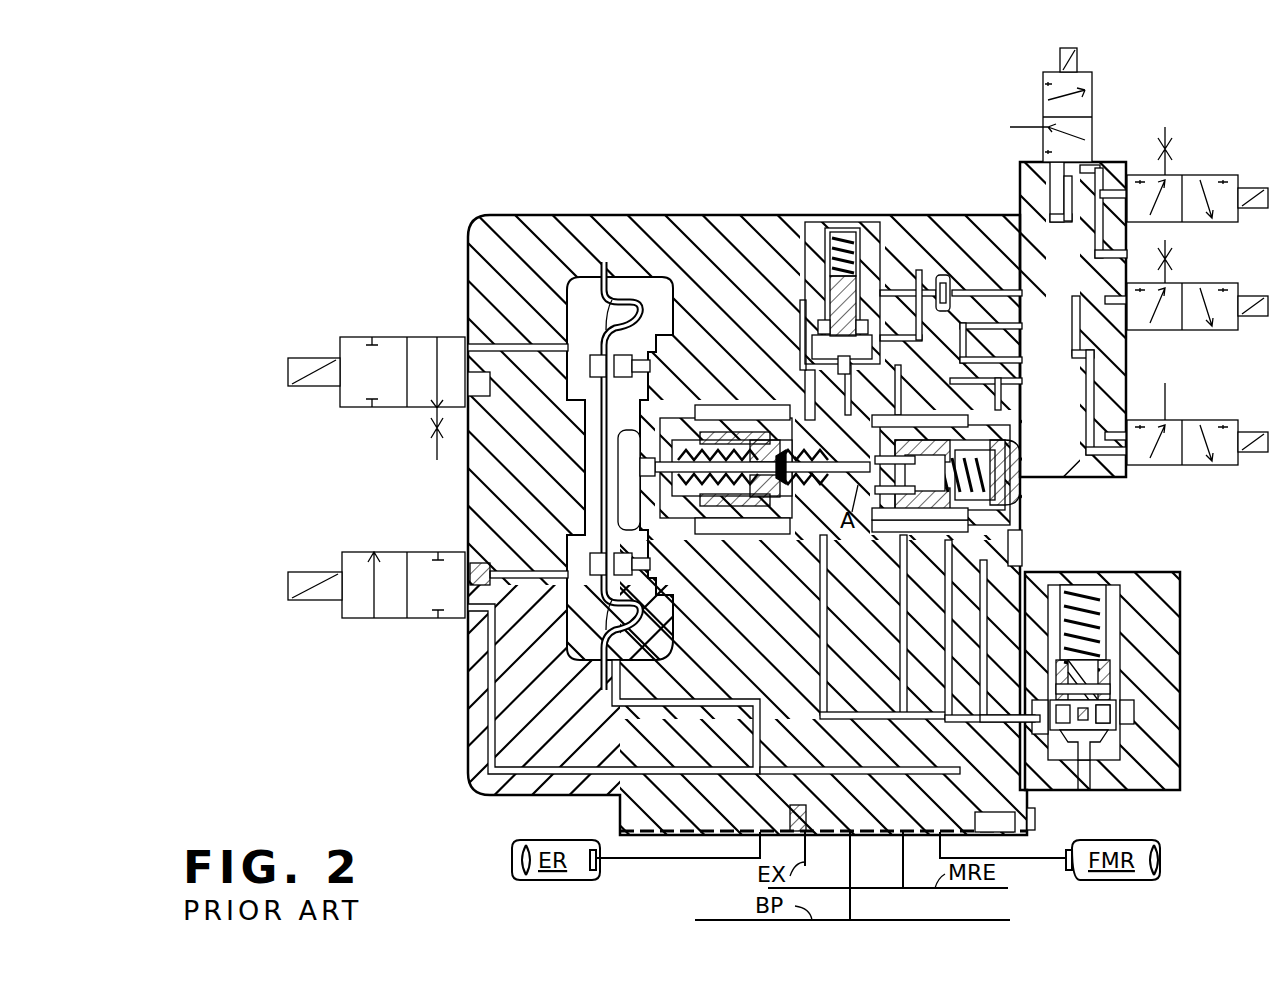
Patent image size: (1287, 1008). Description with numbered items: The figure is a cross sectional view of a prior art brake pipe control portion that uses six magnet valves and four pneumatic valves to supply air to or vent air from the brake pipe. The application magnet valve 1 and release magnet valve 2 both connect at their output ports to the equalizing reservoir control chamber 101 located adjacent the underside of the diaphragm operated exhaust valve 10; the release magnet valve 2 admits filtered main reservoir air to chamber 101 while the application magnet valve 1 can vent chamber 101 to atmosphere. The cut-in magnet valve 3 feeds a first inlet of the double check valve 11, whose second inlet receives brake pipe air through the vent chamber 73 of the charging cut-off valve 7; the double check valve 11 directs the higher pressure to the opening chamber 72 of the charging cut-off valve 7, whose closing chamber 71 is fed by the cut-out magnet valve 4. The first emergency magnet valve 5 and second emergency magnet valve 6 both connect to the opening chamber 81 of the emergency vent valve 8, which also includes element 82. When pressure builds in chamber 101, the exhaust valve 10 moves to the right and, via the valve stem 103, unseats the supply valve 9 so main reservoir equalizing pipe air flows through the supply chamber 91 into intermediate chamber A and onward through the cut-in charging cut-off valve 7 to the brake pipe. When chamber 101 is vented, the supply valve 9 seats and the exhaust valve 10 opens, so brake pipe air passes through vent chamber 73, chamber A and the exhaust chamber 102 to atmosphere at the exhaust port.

The application magnet valve 1 is at (342, 338).
The release magnet valve 2 is at (348, 553).
The cut-in magnet valve 3 is at (1045, 78).
The cut-out magnet valve 4 is at (1230, 420).
The first emergency magnet valve 5 is at (1230, 175).
The second emergency magnet valve 6 is at (1230, 283).
The charging cut-off valve 7 is at (815, 238).
The closing chamber 71 is at (845, 258).
The opening chamber 72 is at (882, 300).
The vent chamber 73 is at (740, 415).
The emergency vent valve 8 is at (1108, 585).
The opening chamber 81 is at (1112, 676).
The valve member 82 is at (1112, 722).
The supply valve 9 is at (1012, 480).
The supply chamber 91 is at (945, 527).
The exhaust valve 10 is at (688, 408).
The double check valve 11 is at (950, 290).
The equalizing reservoir control chamber 101 is at (585, 292).
The exhaust chamber 102 is at (736, 408).
The valve stem 103 is at (865, 428).